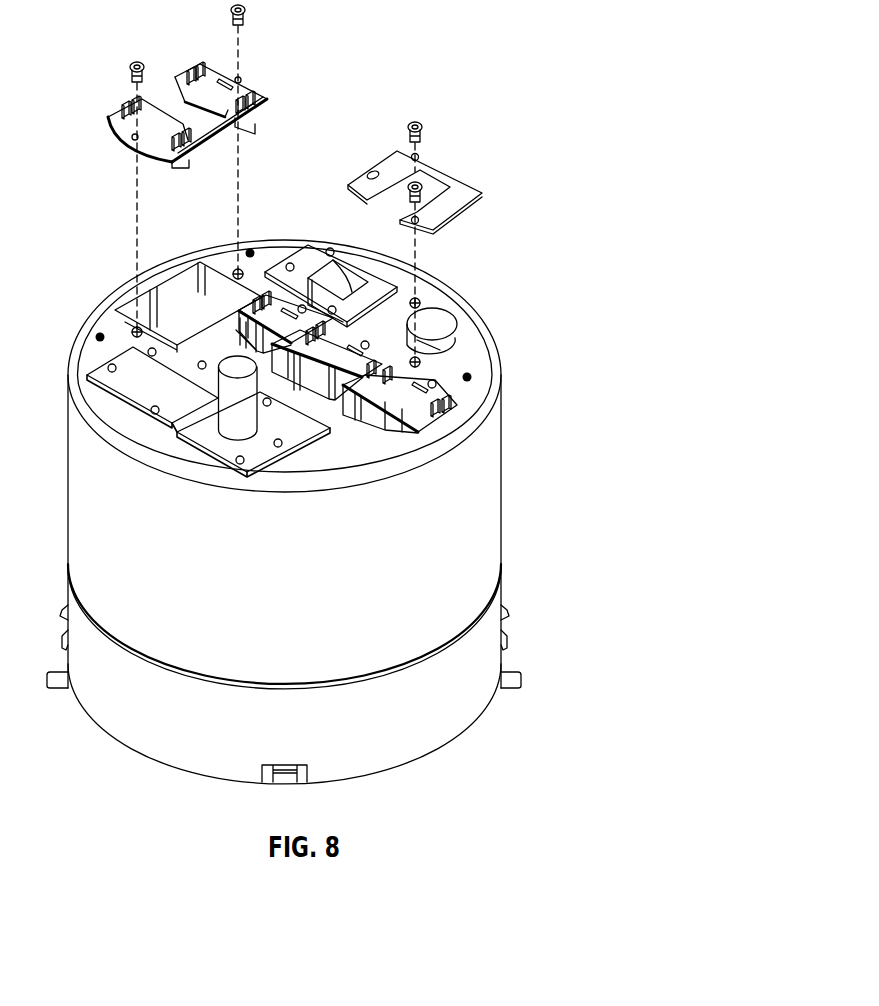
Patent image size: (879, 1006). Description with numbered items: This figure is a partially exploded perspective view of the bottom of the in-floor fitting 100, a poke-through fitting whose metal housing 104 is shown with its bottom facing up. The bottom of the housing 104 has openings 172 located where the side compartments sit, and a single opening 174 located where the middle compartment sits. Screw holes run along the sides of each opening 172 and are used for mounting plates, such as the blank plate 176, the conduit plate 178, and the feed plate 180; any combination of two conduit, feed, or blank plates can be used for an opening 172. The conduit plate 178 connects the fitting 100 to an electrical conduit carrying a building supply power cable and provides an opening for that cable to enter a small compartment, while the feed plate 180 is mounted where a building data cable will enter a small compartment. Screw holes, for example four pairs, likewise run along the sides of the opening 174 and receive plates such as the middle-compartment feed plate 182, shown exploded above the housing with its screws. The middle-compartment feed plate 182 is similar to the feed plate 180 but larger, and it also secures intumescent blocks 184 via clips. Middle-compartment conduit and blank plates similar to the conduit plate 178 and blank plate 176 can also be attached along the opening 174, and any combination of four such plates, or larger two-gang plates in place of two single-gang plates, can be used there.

The in-floor fitting 100 is at (513, 63).
The housing 104 is at (480, 490).
The openings 172 is at (447, 330).
The opening 174 is at (130, 308).
The blank plate 176 is at (115, 387).
The conduit plate 178 is at (202, 425).
The feed plate 180 is at (473, 197).
The middle-compartment feed plate 182 is at (255, 84).
The intumescent blocks 184 is at (250, 122).